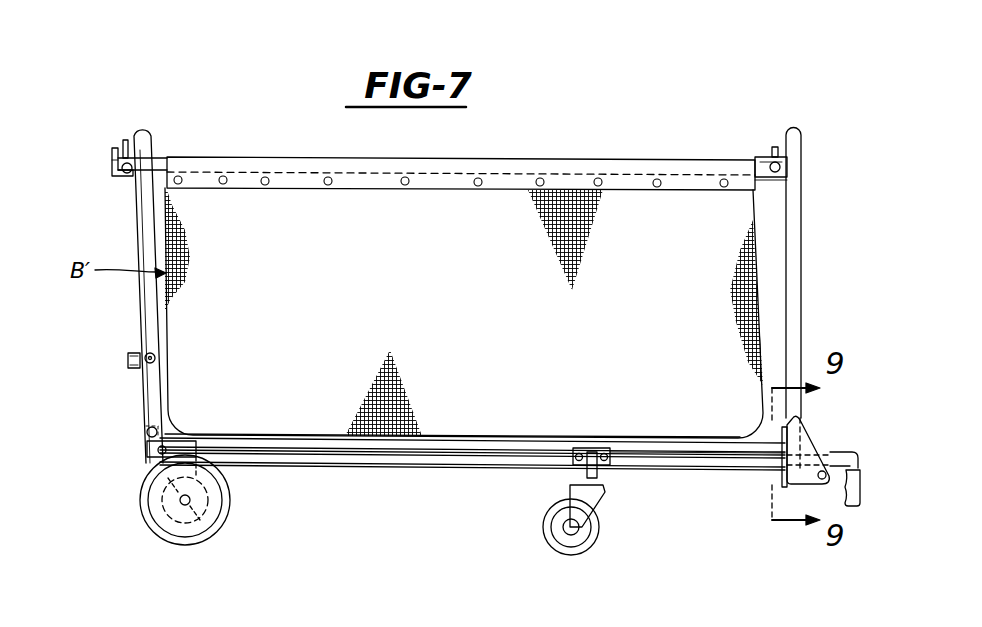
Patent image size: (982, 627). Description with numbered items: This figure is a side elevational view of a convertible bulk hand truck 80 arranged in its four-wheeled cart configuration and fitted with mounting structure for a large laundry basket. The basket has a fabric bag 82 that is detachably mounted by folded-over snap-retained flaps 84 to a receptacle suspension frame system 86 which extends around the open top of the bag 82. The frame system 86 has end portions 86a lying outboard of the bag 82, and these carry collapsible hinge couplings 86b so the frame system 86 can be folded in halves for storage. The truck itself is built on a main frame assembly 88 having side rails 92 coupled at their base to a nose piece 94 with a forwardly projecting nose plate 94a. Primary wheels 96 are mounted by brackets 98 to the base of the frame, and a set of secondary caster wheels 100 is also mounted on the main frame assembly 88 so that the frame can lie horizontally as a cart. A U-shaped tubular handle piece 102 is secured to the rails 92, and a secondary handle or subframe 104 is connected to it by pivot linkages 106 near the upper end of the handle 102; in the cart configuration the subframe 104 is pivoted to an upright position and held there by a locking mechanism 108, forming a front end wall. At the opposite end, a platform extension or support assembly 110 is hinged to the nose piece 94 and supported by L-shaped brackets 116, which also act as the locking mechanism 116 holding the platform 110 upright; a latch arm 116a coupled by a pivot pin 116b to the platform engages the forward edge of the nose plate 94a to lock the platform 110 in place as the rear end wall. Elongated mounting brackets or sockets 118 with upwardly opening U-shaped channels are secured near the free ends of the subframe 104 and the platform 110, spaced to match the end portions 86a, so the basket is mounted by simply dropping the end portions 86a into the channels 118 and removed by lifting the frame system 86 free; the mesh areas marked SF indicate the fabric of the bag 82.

The convertible bulk hand truck 80 is at (106, 175).
The fabric bag 82 is at (162, 297).
The snap-retained flaps 84 is at (300, 176).
The receptacle suspension frame system 86 is at (167, 157).
The end portions 86a is at (124, 176).
The collapsible hinge couplings 86b is at (126, 140).
The main frame assembly 88 is at (455, 470).
The side rails 92 is at (380, 462).
The nose piece 94 is at (133, 448).
The nose plate 94a is at (143, 400).
The primary wheels 96 is at (150, 528).
The brackets 98 is at (160, 494).
The secondary caster wheels 100 is at (596, 536).
The U-shaped tubular handle piece 102 is at (680, 469).
The secondary handle or subframe 104 is at (837, 299).
The pivot linkages 106 is at (834, 432).
The locking mechanism 108 is at (774, 481).
The platform extension or support assembly 110 is at (132, 232).
The L-shaped brackets / locking mechanism 116 is at (116, 362).
The latch arm 116a is at (133, 352).
The pivot pin 116b is at (153, 358).
The mounting brackets or sockets 118 is at (114, 158).
The screen fabric SF is at (598, 178).